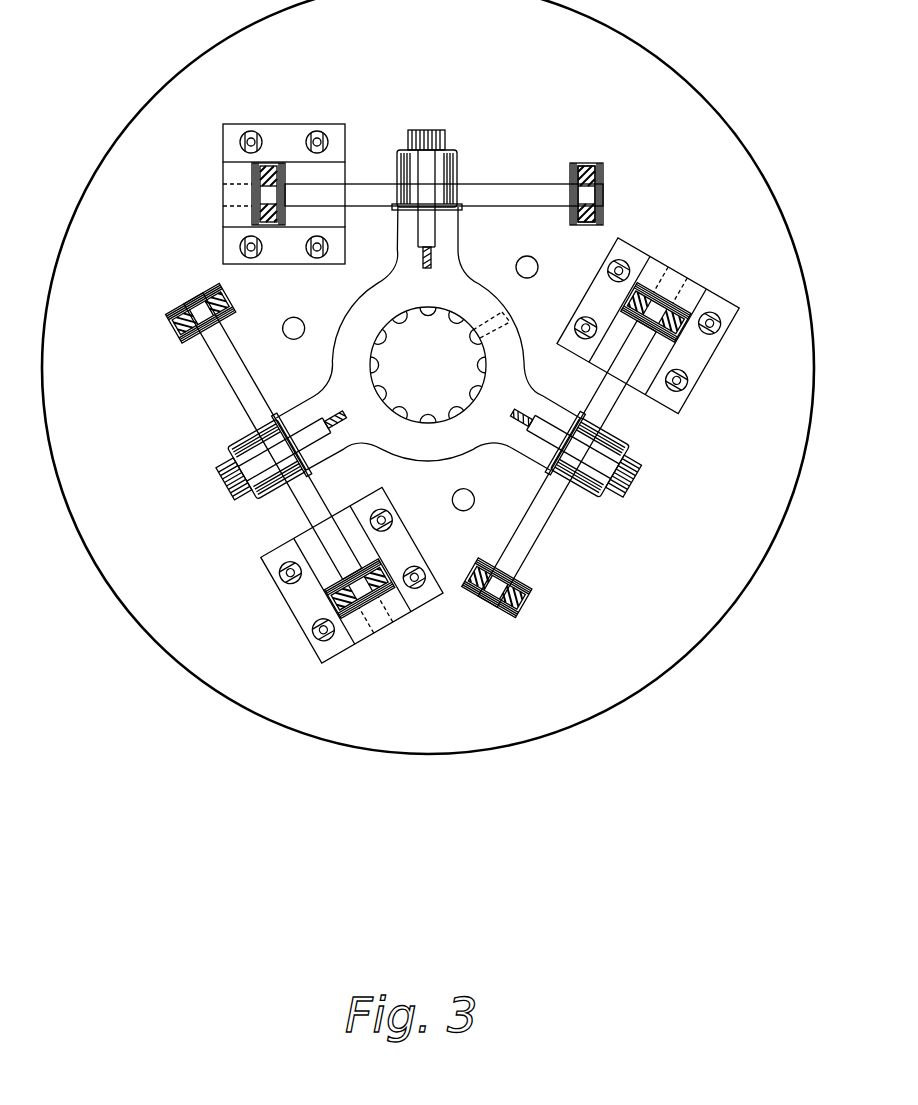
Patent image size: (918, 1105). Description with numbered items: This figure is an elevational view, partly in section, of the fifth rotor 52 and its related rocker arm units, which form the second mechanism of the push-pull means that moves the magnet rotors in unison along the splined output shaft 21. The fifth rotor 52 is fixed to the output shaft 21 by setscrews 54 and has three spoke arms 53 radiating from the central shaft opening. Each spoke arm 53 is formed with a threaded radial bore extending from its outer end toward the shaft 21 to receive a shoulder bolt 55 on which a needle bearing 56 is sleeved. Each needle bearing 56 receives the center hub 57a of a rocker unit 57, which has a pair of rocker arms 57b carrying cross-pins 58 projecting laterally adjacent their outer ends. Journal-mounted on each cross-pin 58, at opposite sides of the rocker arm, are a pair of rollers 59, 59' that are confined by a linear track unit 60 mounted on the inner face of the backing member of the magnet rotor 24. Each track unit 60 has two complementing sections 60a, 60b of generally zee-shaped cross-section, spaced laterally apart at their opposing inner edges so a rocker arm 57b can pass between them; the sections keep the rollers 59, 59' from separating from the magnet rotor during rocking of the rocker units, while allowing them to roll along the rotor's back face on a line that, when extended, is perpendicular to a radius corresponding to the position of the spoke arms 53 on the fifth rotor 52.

The splined output shaft 21 is at (442, 376).
The magnet rotor 24 is at (162, 601).
The fifth rotor 52 is at (338, 323).
The spoke arms 53 is at (455, 241).
The setscrews 54 is at (505, 318).
The shoulder bolts 55 is at (422, 130).
The needle bearings 56 is at (452, 152).
The rocker units 57 is at (444, 173).
The center hubs 57a is at (458, 172).
The rocker arms 57b is at (540, 205).
The cross-pins 58 is at (172, 332).
The roller 59 is at (625, 178).
The roller 59' is at (629, 194).
The linear track units 60 is at (227, 185).
The track section 60a is at (288, 130).
The track section 60b is at (284, 270).